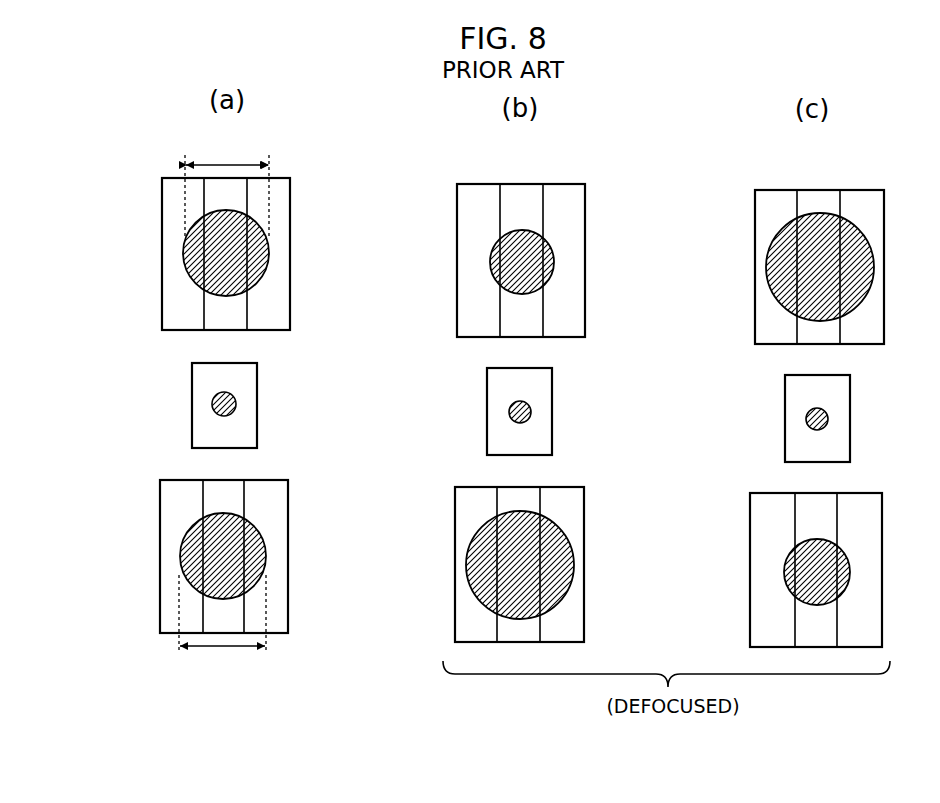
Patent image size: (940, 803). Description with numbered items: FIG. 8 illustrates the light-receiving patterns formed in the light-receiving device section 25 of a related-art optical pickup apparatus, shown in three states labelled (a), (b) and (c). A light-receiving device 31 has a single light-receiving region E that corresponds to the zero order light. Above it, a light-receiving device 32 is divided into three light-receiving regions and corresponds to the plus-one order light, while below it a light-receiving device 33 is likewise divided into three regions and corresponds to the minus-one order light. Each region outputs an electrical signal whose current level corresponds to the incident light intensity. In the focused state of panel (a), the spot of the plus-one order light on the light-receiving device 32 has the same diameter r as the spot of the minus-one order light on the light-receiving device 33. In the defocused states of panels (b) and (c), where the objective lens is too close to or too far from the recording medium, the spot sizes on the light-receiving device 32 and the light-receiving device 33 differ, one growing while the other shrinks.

The light-receiving device section 25 is at (130, 158).
The light-receiving device 32 is at (160, 242).
The light-receiving device 31 is at (190, 393).
The light-receiving region E is at (258, 424).
The light-receiving device 33 is at (158, 546).